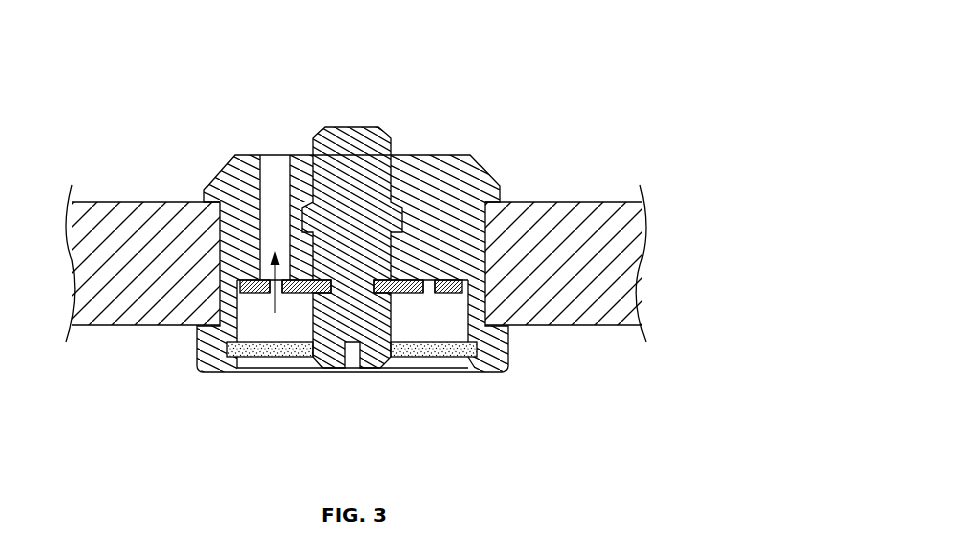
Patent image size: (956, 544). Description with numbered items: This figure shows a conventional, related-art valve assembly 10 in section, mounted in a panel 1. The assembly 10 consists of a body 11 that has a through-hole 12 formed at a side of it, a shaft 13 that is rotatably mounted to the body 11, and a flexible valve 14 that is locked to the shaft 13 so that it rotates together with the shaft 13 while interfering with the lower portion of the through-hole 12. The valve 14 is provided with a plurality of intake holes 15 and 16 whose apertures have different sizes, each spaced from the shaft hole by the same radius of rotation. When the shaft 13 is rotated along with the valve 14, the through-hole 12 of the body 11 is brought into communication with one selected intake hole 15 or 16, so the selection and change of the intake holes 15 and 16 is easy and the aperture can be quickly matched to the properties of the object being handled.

The panel 1 is at (580, 200).
The valve assembly 10 is at (562, 100).
The body 11 is at (437, 155).
The through-hole 12 is at (270, 168).
The shaft 13 is at (353, 125).
The flexible valve 14 is at (478, 300).
The intake hole 15 is at (278, 292).
The intake hole 16 is at (432, 292).